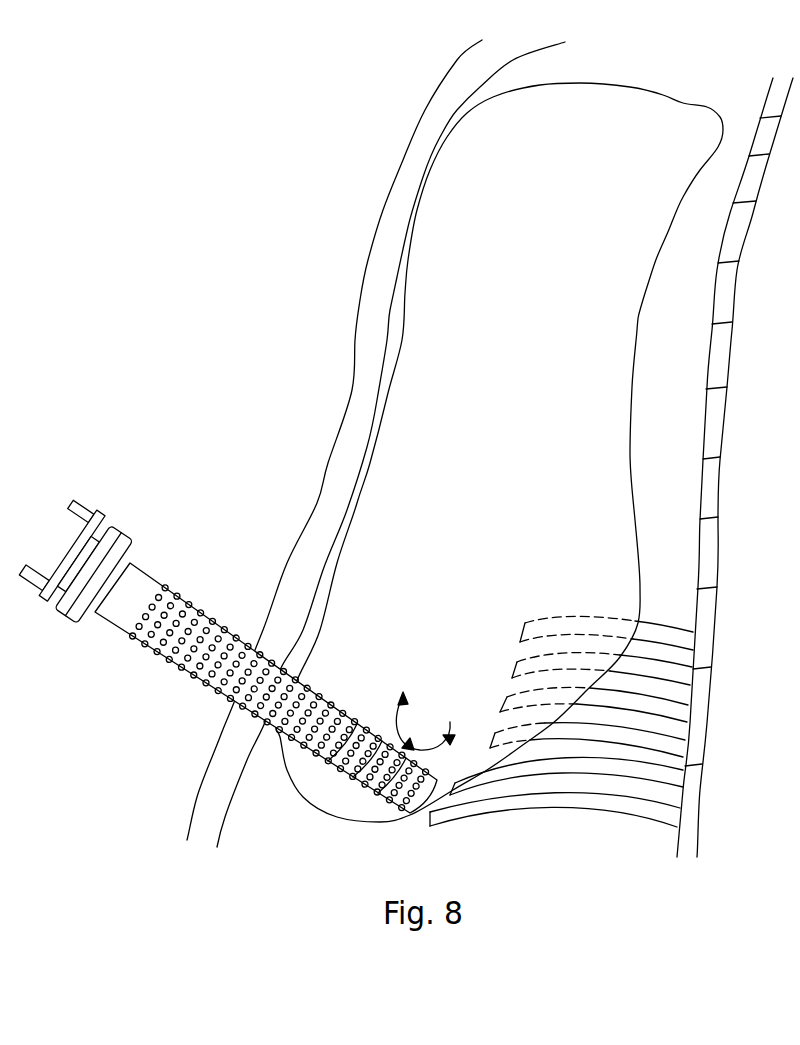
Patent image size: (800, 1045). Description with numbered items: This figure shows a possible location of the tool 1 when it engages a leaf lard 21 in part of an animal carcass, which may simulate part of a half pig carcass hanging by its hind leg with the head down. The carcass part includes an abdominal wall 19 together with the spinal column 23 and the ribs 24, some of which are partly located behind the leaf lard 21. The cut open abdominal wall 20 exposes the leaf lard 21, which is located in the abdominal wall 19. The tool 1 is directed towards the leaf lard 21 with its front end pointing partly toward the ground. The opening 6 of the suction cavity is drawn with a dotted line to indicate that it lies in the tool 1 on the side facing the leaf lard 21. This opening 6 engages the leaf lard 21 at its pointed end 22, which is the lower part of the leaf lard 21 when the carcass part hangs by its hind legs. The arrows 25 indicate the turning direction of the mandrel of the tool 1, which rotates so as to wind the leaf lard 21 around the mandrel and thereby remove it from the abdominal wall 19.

The tool 1 is at (130, 593).
The opening of the suction cavity 6 is at (350, 768).
The abdominal wall 19 is at (675, 436).
The cut open abdominal wall 20 is at (328, 505).
The leaf lard 21 is at (518, 429).
The pointed end of the leaf lard 22 is at (307, 773).
The spinal column 23 is at (708, 482).
The ribs 24 is at (627, 805).
The arrows 25 is at (425, 721).